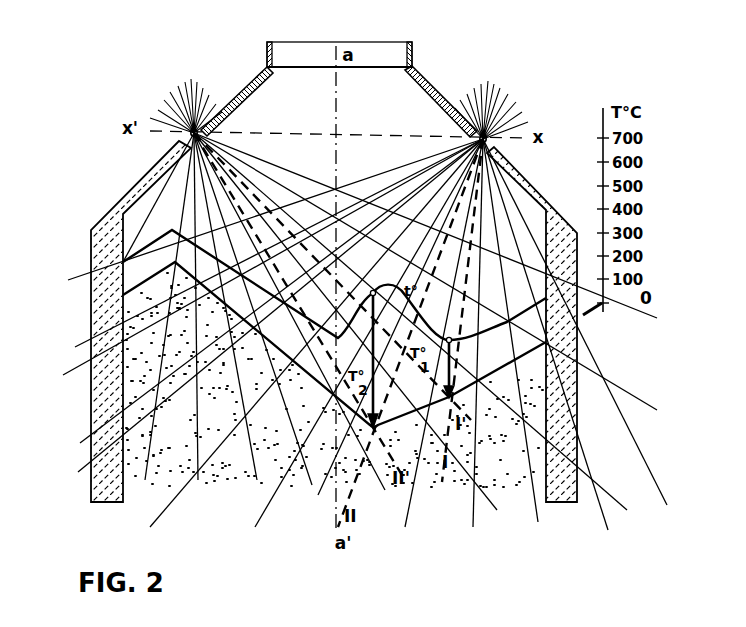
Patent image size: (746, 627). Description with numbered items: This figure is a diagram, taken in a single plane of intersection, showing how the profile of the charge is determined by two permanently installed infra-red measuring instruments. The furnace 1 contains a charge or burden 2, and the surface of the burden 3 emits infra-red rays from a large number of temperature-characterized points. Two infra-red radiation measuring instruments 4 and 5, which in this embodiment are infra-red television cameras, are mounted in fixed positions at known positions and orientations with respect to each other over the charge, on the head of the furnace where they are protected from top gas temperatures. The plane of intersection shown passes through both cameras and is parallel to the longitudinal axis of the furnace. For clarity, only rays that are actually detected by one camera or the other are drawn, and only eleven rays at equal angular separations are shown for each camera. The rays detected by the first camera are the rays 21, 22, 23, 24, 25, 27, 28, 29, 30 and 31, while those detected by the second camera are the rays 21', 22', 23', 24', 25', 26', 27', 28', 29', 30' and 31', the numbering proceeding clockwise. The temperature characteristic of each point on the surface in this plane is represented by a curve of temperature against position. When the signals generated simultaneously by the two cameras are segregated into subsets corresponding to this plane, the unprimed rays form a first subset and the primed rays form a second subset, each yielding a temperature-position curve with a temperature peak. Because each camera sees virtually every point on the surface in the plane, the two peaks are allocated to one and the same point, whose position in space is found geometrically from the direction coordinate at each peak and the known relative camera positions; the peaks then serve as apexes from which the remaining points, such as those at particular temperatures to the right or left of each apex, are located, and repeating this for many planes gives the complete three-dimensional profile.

The furnace 1 is at (90, 262).
The charge or burden 2 is at (265, 441).
The surface of the burden 3 is at (282, 351).
The infra-red radiation measuring instrument 4 is at (182, 106).
The infra-red radiation measuring instrument 5 is at (497, 109).
The ray 21 is at (582, 336).
The ray 21' is at (442, 231).
The ray 22 is at (552, 346).
The ray 22' is at (439, 274).
The ray 23 is at (518, 345).
The ray 23' is at (423, 330).
The ray 24 is at (474, 346).
The ray 24' is at (361, 326).
The ray 25 is at (437, 346).
The ray 25' is at (294, 323).
The ray 26' is at (260, 322).
The ray 27 is at (362, 346).
The ray 27' is at (232, 321).
The ray 28 is at (309, 346).
The ray 28' is at (197, 322).
The ray 29 is at (266, 318).
The ray 29' is at (159, 321).
The ray 30 is at (262, 267).
The ray 30' is at (264, 298).
The ray 31 is at (264, 216).
The ray 31' is at (263, 251).